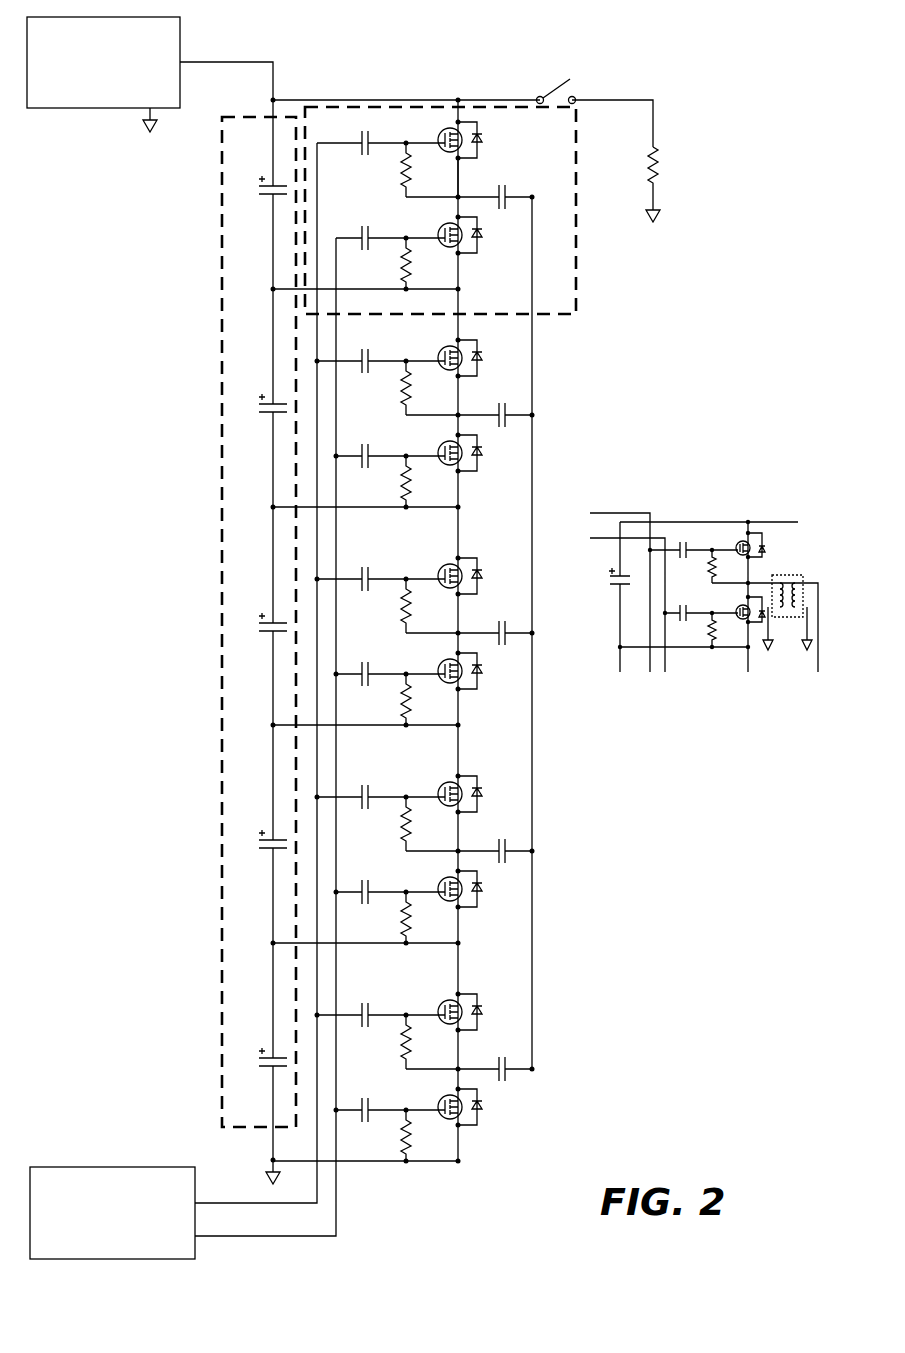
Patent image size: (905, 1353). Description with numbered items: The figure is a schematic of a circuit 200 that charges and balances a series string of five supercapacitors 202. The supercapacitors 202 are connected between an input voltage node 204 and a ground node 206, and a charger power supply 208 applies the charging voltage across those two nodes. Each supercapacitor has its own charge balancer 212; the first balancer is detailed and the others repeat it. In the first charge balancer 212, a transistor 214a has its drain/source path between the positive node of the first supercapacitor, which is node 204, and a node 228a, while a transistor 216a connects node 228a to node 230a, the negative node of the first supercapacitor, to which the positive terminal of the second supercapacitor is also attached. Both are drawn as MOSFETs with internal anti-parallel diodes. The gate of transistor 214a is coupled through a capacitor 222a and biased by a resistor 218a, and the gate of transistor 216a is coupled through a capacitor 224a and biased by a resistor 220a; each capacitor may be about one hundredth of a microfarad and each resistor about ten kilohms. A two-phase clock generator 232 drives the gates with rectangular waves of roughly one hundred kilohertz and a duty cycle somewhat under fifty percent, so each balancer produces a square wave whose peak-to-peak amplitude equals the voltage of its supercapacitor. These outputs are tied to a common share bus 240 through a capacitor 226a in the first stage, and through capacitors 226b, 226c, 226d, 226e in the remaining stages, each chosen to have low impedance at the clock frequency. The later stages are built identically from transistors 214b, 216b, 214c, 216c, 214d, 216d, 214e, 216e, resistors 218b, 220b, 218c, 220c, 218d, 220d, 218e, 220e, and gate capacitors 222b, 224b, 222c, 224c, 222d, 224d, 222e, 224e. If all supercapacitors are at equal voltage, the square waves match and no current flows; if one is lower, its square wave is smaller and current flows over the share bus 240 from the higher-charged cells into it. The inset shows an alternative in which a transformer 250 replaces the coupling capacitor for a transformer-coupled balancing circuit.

The circuit 200 is at (749, 75).
The supercapacitors 202 is at (222, 287).
The input voltage node 204 is at (273, 96).
The ground node 206 is at (273, 1160).
The charger power supply 208 is at (89, 108).
The charge balancer 212 is at (575, 250).
The transistor 214a is at (483, 140).
The transistor 216a is at (478, 241).
The resistor 218a is at (395, 181).
The resistor 220a is at (393, 275).
The capacitor 222a is at (363, 121).
The capacitor 224a is at (366, 228).
The capacitor 226a is at (505, 187).
The node 228a is at (458, 181).
The node 230a is at (462, 277).
The transistor 214b is at (480, 356).
The transistor 216b is at (467, 467).
The resistor 218b is at (401, 400).
The resistor 220b is at (397, 486).
The capacitor 222b is at (367, 342).
The capacitor 224b is at (366, 445).
The capacitor 226b is at (502, 403).
The transistor 214c is at (484, 571).
The transistor 216c is at (482, 671).
The resistor 218c is at (393, 612).
The resistor 220c is at (395, 708).
The capacitor 222c is at (360, 565).
The capacitor 224c is at (368, 662).
The capacitor 226c is at (506, 623).
The transistor 214d is at (484, 788).
The transistor 216d is at (482, 889).
The resistor 218d is at (395, 830).
The resistor 220d is at (395, 924).
The capacitor 222d is at (360, 784).
The capacitor 224d is at (366, 880).
The capacitor 226d is at (505, 838).
The transistor 214e is at (482, 1010).
The transistor 216e is at (477, 1107).
The resistor 218e is at (392, 1046).
The resistor 220e is at (400, 1139).
The capacitor 222e is at (358, 1002).
The capacitor 224e is at (368, 1098).
The capacitor 226e is at (502, 1061).
The clock generator 232 is at (50, 1167).
The share bus 240 is at (532, 458).
The transformer 250 is at (785, 575).